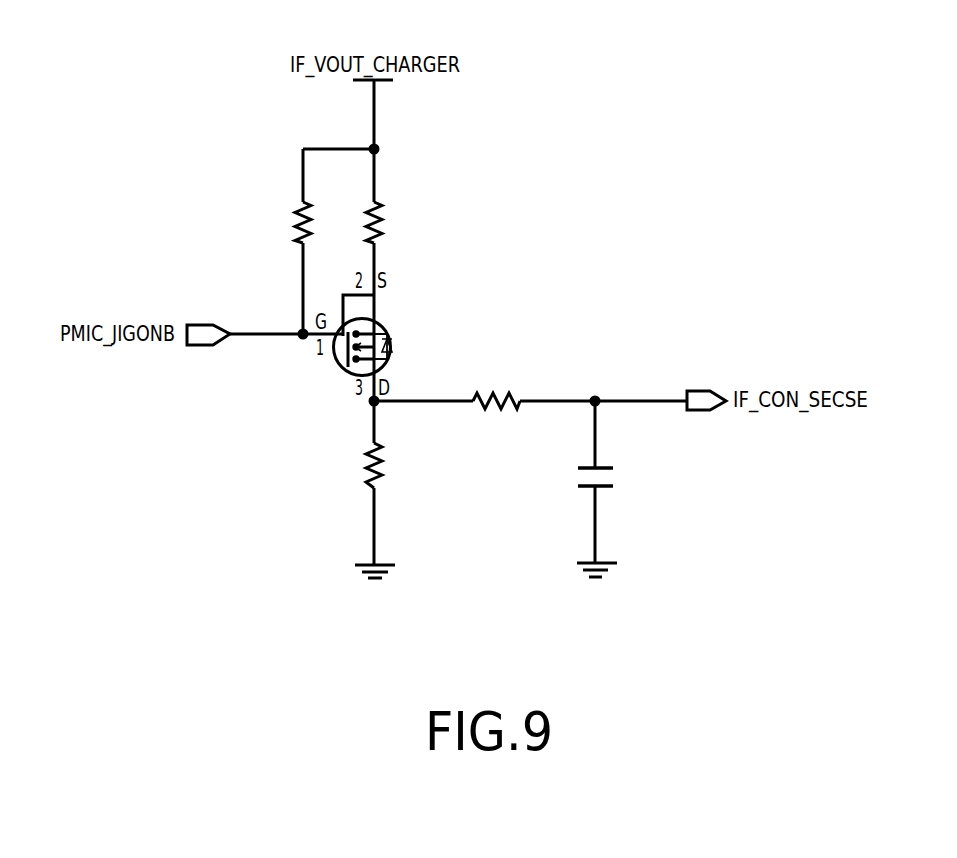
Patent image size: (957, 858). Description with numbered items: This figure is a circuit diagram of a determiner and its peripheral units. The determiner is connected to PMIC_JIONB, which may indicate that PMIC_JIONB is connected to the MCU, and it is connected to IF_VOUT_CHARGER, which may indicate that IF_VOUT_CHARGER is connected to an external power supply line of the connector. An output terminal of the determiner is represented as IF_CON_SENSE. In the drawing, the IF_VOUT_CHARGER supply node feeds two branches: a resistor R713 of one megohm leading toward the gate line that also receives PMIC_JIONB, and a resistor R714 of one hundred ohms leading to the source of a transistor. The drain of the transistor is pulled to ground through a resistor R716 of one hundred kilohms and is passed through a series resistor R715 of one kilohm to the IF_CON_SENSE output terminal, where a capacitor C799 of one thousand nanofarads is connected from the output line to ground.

The resistor R713 is at (275, 218).
The resistor R714 is at (400, 220).
The resistor R715 is at (506, 390).
The resistor R716 is at (402, 466).
The capacitor C799 is at (629, 476).